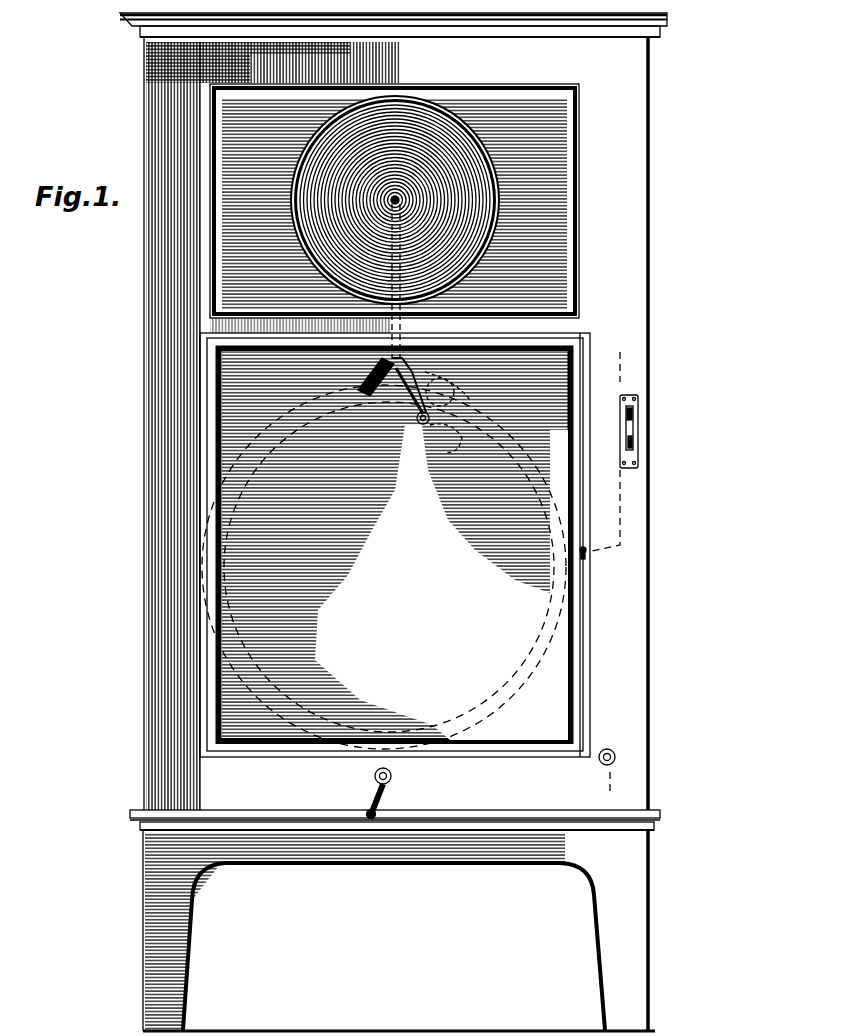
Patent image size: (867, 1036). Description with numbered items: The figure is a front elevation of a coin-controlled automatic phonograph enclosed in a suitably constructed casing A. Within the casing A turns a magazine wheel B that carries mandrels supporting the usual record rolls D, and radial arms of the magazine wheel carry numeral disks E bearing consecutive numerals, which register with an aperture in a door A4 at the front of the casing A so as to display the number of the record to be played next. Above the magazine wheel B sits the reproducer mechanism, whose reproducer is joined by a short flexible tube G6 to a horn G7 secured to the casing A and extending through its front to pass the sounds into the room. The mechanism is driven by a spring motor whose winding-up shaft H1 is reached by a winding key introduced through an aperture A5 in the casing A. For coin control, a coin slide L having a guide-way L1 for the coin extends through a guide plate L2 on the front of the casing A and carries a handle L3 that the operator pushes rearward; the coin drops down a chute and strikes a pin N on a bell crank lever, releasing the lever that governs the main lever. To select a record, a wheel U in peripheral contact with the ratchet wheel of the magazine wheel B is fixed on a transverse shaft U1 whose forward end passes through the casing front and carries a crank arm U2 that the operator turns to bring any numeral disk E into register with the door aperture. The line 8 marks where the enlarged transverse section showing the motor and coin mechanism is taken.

The casing A is at (148, 547).
The door A4 is at (560, 683).
The aperture A5 is at (612, 780).
The magazine wheel B is at (483, 712).
The record rolls D is at (466, 403).
The numeral disks E is at (446, 446).
The pin N is at (393, 401).
The flexible tube G6 is at (416, 281).
The horn G7 is at (483, 166).
The coin slide L is at (641, 425).
The guide-way L1 is at (634, 412).
The guide plate L2 is at (619, 468).
The handle L3 is at (636, 447).
The section line 8— 8 is at (608, 570).
The winding-up shaft H1 is at (613, 749).
The wheel U is at (394, 776).
The transverse shaft U1 is at (392, 786).
The crank arm U2 is at (366, 808).